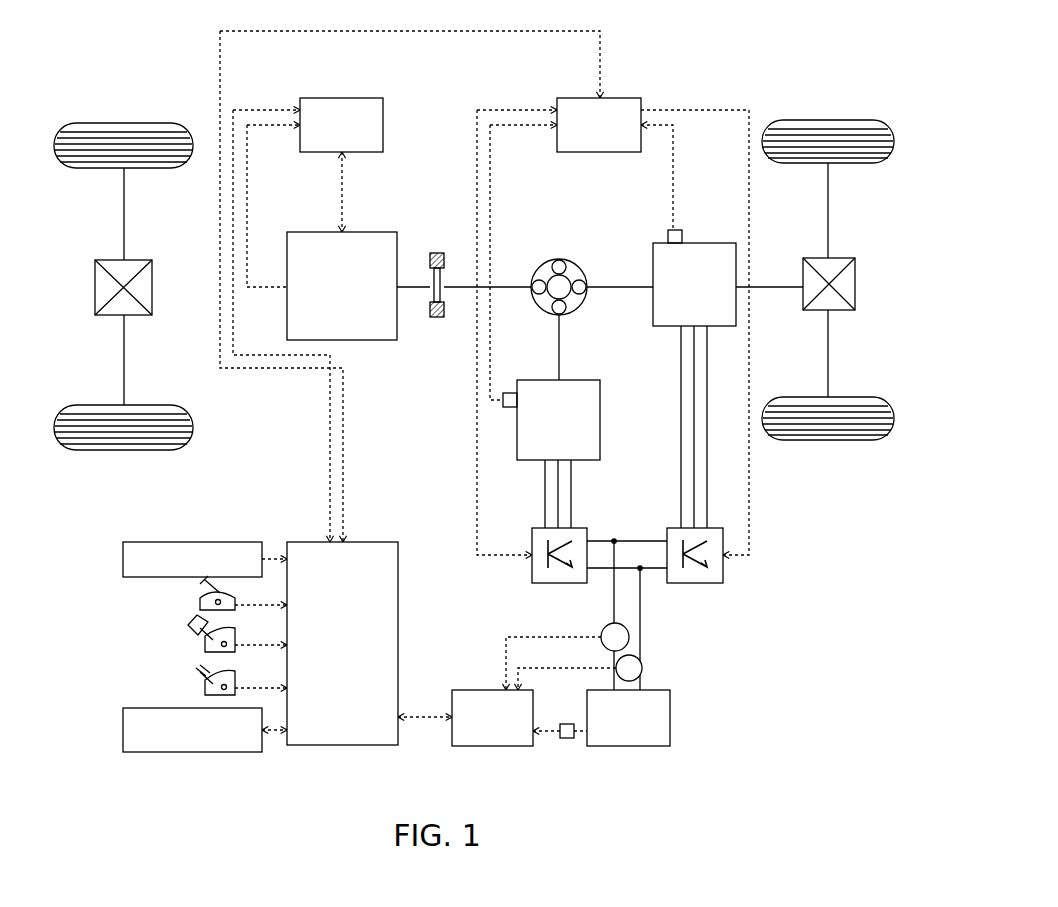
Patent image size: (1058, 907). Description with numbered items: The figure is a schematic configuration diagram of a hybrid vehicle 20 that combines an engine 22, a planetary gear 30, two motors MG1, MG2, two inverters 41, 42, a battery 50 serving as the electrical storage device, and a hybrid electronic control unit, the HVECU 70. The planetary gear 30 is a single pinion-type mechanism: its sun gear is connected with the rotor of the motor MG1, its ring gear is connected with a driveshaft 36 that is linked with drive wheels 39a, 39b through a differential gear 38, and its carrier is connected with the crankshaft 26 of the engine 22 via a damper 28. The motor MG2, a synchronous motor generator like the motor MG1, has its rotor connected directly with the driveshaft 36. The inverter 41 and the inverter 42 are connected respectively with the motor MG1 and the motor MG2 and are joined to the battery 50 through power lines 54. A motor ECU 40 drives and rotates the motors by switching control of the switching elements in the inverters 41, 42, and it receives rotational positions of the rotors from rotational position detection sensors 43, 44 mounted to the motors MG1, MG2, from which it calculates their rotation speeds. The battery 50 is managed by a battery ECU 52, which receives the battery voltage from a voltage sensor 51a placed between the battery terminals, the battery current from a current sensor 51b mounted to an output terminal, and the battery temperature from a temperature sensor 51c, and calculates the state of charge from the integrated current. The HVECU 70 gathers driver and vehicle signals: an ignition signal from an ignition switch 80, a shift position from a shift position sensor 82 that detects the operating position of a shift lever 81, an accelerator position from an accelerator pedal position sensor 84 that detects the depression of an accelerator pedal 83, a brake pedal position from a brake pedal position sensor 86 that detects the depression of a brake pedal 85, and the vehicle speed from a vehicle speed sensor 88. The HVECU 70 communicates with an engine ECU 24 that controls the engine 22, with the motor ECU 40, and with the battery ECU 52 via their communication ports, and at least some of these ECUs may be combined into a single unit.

The hybrid vehicle 20 is at (735, 68).
The engine 22 is at (360, 231).
The engine ECU 24 is at (340, 97).
The crankshaft 26 is at (405, 284).
The damper 28 is at (437, 252).
The planetary gear 30 is at (553, 261).
The driveshaft 36 is at (771, 284).
The differential gear 38 is at (833, 257).
The drive wheel 39a is at (826, 119).
The drive wheel 39b is at (827, 440).
The motor ECU 40 is at (610, 97).
The inverter 41 is at (583, 527).
The inverter 42 is at (718, 527).
The rotational position detection sensor 43 is at (508, 392).
The rotational position detection sensor 44 is at (667, 229).
The battery 50 is at (670, 716).
The voltage sensor 51a is at (643, 668).
The current sensor 51b is at (630, 637).
The temperature sensor 51c is at (567, 739).
The battery ECU 52 is at (478, 689).
The power lines 54 is at (616, 604).
The HVECU 70 is at (365, 541).
The ignition switch 80 is at (123, 559).
The shift lever 81 is at (200, 592).
The shift position sensor 82 is at (200, 605).
The accelerator pedal 83 is at (200, 640).
The accelerator pedal position sensor 84 is at (210, 650).
The brake pedal 85 is at (200, 686).
The brake pedal position sensor 86 is at (200, 695).
The vehicle speed sensor 88 is at (123, 728).
The motor MG1 is at (585, 379).
The motor MG2 is at (708, 243).